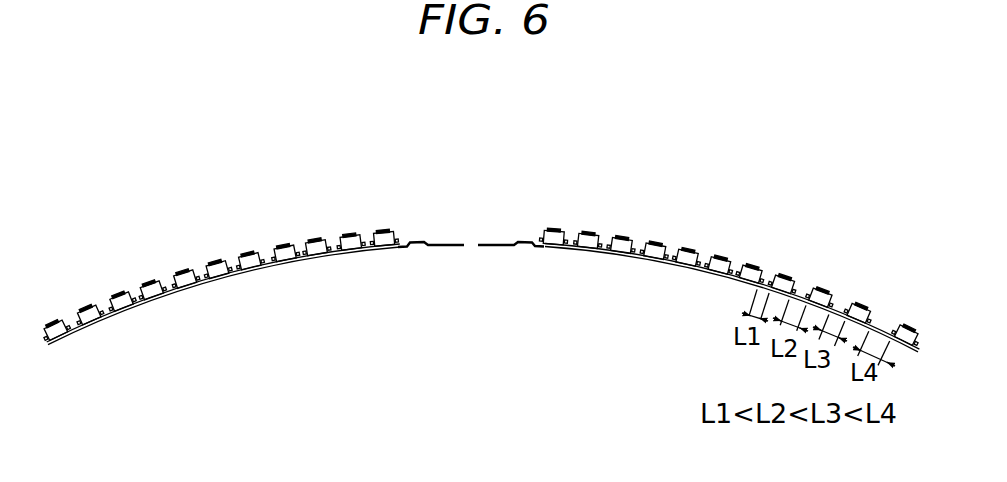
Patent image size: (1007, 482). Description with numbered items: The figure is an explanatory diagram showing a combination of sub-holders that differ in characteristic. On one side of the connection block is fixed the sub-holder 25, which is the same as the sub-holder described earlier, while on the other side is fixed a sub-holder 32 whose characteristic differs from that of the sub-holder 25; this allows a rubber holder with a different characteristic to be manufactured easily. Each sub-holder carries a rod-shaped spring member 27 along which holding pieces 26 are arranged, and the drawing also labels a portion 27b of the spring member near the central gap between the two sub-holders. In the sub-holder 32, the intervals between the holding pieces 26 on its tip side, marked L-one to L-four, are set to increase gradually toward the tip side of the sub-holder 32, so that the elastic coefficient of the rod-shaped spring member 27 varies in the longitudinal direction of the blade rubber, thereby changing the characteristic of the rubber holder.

The sub-holder 25 is at (188, 262).
The holding pieces 26 is at (282, 247).
The rod-shaped spring member 27 is at (433, 241).
The bent portion of substrate 27b is at (415, 253).
The sub-holder 32 is at (727, 248).